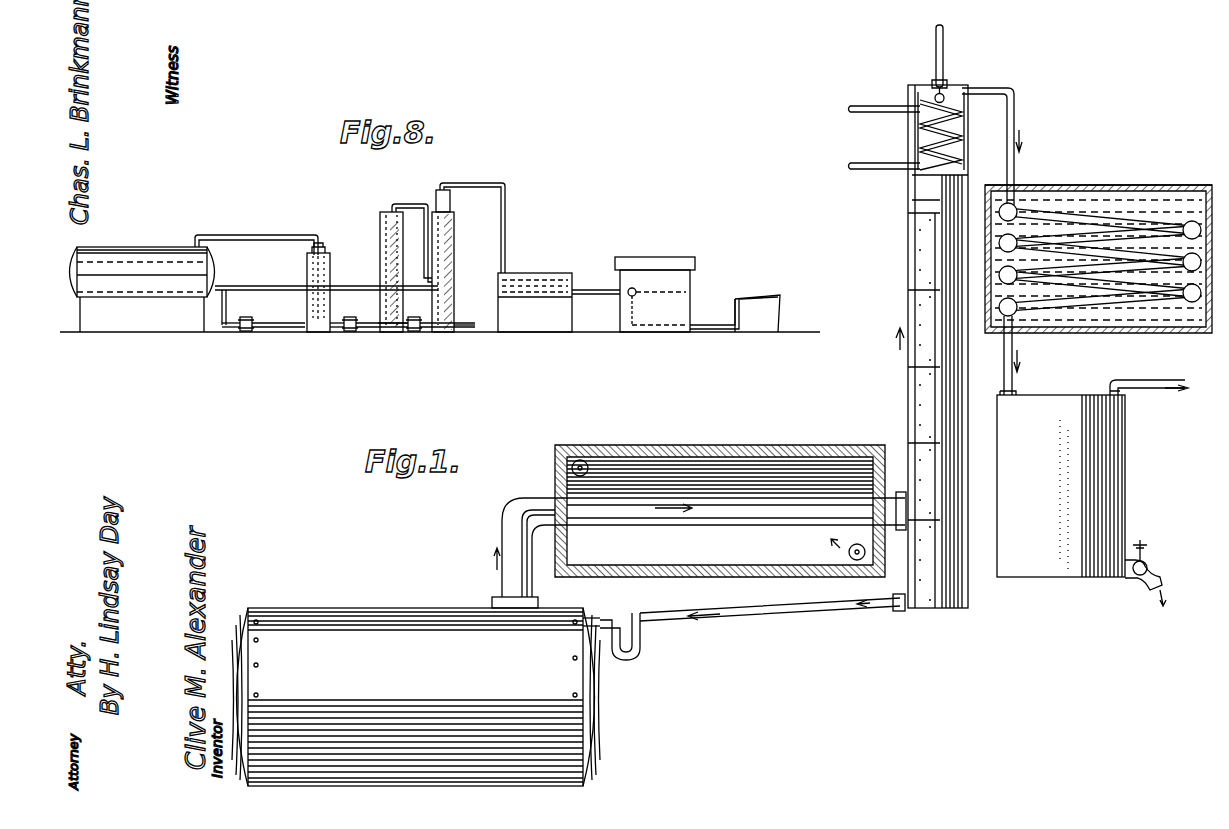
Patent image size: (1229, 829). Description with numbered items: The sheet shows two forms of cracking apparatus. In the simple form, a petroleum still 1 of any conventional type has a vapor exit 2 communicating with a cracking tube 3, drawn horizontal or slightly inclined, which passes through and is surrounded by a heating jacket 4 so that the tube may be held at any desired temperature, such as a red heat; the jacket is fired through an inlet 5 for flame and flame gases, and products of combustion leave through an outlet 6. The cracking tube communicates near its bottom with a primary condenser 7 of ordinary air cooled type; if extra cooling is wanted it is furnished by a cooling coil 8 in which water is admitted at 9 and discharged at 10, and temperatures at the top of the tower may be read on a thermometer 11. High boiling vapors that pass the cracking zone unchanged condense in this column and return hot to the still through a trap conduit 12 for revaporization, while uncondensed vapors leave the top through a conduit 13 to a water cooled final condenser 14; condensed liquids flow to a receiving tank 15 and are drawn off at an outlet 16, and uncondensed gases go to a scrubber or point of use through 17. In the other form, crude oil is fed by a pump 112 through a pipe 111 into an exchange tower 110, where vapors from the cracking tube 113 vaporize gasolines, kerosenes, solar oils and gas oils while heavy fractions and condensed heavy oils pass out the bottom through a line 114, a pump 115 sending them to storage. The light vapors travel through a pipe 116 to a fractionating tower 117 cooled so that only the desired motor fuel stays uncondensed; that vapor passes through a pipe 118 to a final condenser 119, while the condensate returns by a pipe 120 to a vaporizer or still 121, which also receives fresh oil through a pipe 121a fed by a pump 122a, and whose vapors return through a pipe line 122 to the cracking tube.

In FIG. 1, the petroleum still 1 is at (363, 612).
In FIG. 1, the vapor exit 2 is at (528, 500).
In FIG. 1, the cracking tube 3 is at (725, 500).
In FIG. 1, the heating jacket 4 is at (785, 450).
In FIG. 1, the inlet 5 is at (857, 562).
In FIG. 1, the outlet 6 is at (588, 462).
In FIG. 1, the primary condenser 7 is at (908, 242).
In FIG. 1, the cooling coil 8 is at (914, 126).
In FIG. 1, the water inlet 9 is at (850, 108).
In FIG. 1, the water discharge 10 is at (850, 166).
In FIG. 1, the thermometer 11 is at (946, 50).
In FIG. 1, the trap conduit 12 is at (720, 622).
In FIG. 1, the conduit 13 is at (1016, 112).
In FIG. 1, the final condenser 14 is at (1180, 222).
In FIG. 1, the receiving tank 15 is at (1118, 457).
In FIG. 1, the outlet 16 is at (1160, 560).
In FIG. 1, the gas outlet 17 is at (1148, 380).
In FIG. 8, the exchange tower 110 is at (380, 228).
In FIG. 8, the pipe 111 is at (466, 332).
In FIG. 8, the pump 112 is at (414, 337).
In FIG. 8, the cracking tube 113 is at (330, 272).
In FIG. 8, the line 114 is at (390, 332).
In FIG. 8, the pump 115 is at (349, 331).
In FIG. 8, the pipe 116 is at (403, 204).
In FIG. 8, the fractionating tower 117 is at (452, 248).
In FIG. 8, the pipe 118 is at (486, 182).
In FIG. 8, the final condenser 119 is at (548, 273).
In FIG. 8, the pipe 120 is at (270, 276).
In FIG. 8, the vaporizer or still 121 is at (170, 245).
In FIG. 8, the pipe 121a is at (222, 328).
In FIG. 8, the pipe line 122 is at (278, 226).
In FIG. 8, the pump 122a is at (247, 331).